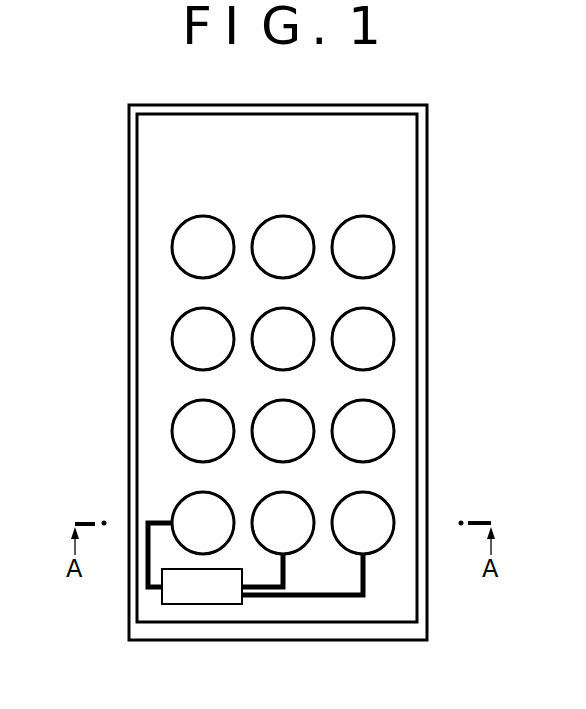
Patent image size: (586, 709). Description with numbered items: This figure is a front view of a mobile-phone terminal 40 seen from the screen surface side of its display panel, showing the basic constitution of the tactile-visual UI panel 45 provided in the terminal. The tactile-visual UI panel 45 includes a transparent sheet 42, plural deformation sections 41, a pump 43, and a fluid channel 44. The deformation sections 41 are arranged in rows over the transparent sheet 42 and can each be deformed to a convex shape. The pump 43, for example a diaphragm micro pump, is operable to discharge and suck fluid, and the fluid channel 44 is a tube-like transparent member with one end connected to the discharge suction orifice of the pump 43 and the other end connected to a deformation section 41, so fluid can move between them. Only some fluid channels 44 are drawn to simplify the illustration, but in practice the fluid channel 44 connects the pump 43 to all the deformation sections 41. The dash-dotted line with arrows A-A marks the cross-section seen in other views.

The mobile-phone terminal 40 is at (440, 246).
The deformation section 41 is at (172, 248).
The transparent sheet 42 is at (279, 368).
The pump 43 is at (205, 604).
The fluid channel 44 is at (148, 580).
The tactile-visual UI panel 45 is at (422, 398).